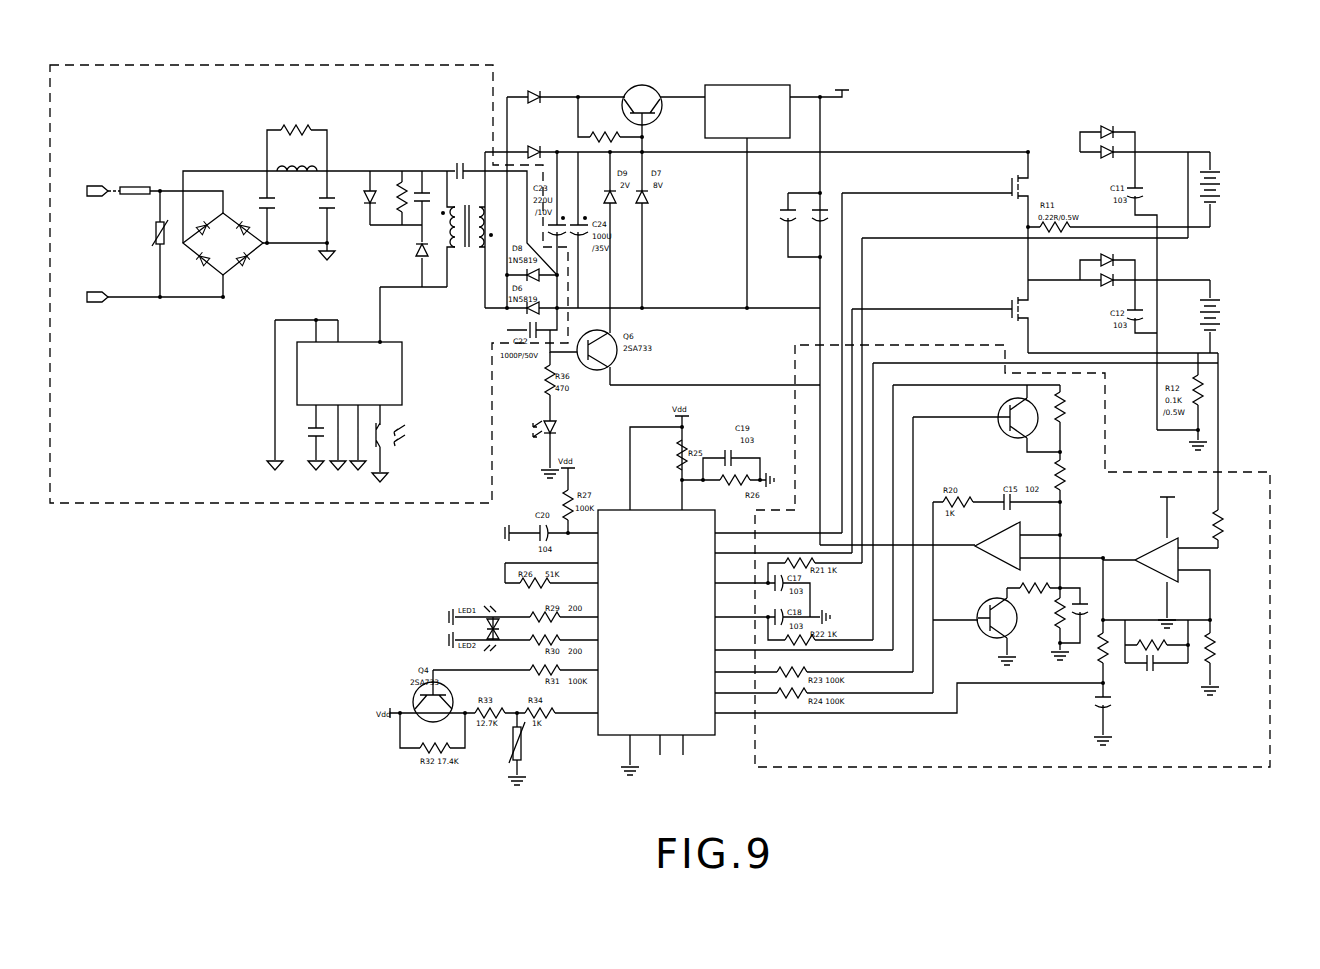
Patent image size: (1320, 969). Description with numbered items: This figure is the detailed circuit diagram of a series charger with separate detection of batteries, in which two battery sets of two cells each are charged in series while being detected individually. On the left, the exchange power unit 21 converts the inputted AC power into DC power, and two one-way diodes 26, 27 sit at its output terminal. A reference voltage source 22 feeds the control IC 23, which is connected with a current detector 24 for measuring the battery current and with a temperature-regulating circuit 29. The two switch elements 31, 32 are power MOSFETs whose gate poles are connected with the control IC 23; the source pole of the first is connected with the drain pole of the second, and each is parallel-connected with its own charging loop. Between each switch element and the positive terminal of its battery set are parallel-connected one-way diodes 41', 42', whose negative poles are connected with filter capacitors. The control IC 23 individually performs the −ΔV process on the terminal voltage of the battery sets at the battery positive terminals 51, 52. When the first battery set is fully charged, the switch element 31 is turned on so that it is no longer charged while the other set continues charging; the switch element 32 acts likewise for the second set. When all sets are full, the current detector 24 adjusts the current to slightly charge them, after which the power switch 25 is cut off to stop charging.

The exchange power unit 21 is at (319, 82).
The reference voltage source 22 is at (858, 50).
The control IC 23 is at (698, 727).
The current detector 24 is at (985, 755).
The power switch 25 is at (423, 452).
The one-way diode 26 is at (525, 133).
The one-way diode 27 is at (538, 83).
The temperature-regulating circuit 29 is at (498, 759).
The switch element 31 is at (1008, 178).
The switch element 32 is at (1008, 295).
The parallel-connected diodes 41' is at (1121, 118).
The parallel-connected diodes 42' is at (1121, 268).
The battery positive terminal 51 is at (1188, 143).
The battery positive terminal 52 is at (1188, 278).